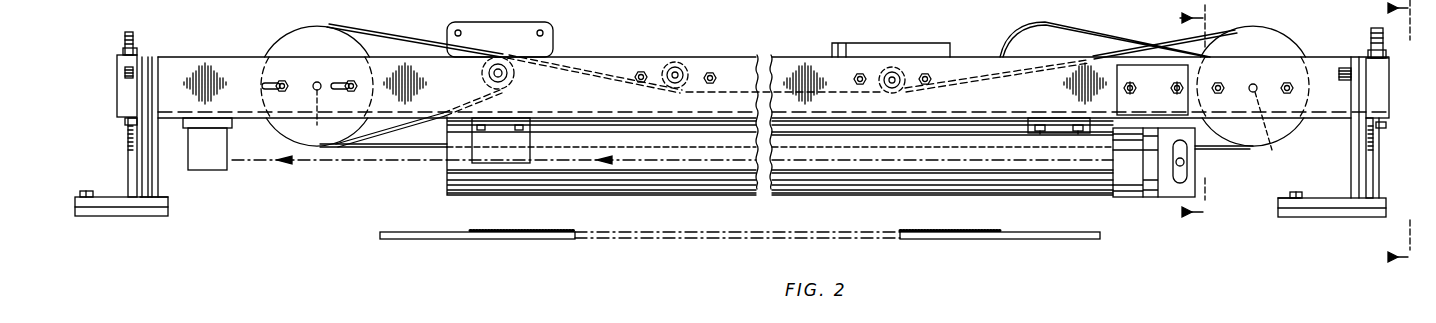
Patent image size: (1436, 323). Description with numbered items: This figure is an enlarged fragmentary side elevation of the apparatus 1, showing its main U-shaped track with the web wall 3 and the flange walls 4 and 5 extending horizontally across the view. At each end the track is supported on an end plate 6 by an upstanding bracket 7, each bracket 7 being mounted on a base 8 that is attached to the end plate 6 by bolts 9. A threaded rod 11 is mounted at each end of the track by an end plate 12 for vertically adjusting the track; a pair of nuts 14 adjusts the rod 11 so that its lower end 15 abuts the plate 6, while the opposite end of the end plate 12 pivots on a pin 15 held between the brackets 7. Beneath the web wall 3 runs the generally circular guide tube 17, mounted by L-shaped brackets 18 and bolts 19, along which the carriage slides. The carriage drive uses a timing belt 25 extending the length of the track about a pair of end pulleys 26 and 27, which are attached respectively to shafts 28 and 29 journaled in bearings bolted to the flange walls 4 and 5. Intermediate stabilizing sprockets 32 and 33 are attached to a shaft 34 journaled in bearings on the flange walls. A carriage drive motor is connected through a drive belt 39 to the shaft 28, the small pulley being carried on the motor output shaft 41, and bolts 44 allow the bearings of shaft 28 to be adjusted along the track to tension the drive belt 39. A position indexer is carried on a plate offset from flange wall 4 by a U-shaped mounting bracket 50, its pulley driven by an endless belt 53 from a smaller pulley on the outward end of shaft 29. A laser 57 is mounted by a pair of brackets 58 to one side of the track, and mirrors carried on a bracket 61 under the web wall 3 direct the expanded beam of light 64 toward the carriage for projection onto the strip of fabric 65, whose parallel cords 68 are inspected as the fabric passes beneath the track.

The apparatus 1 is at (240, 40).
The web wall 3 is at (1407, 134).
The flange wall 4 is at (1201, 114).
The flange wall 5 is at (603, 57).
The end plate 6 is at (116, 217).
The upstanding bracket 7 is at (132, 157).
The base 8 is at (150, 206).
The bolt 9 is at (86, 191).
The threaded rod 11 is at (129, 32).
The end plate 12 is at (146, 85).
The nut 14 is at (136, 53).
The lower end / pin 15 is at (125, 74).
The guide tube 17 is at (701, 172).
The L-shaped bracket 18 is at (503, 147).
The bolt 19 is at (1040, 131).
The timing belt 25 is at (410, 44).
The end pulley 26 is at (302, 42).
The end pulley 27 is at (1262, 45).
The shaft 28 is at (316, 111).
The shaft 29 is at (1266, 129).
The intermediate stabilizing sprocket 32 is at (680, 60).
The intermediate stabilizing sprocket 33 is at (890, 62).
The shaft 34 is at (903, 92).
The drive belt 39 is at (480, 95).
The motor output shaft 41 is at (499, 57).
The bolt 44 is at (353, 80).
The U-shaped mounting bracket 50 is at (937, 50).
The endless belt 53 is at (1105, 40).
The laser 57 is at (928, 163).
The bracket 58 is at (1130, 168).
The bracket 61 is at (209, 152).
The beam of light 64 is at (385, 160).
The fabric 65 is at (930, 228).
The cord 68 is at (495, 230).